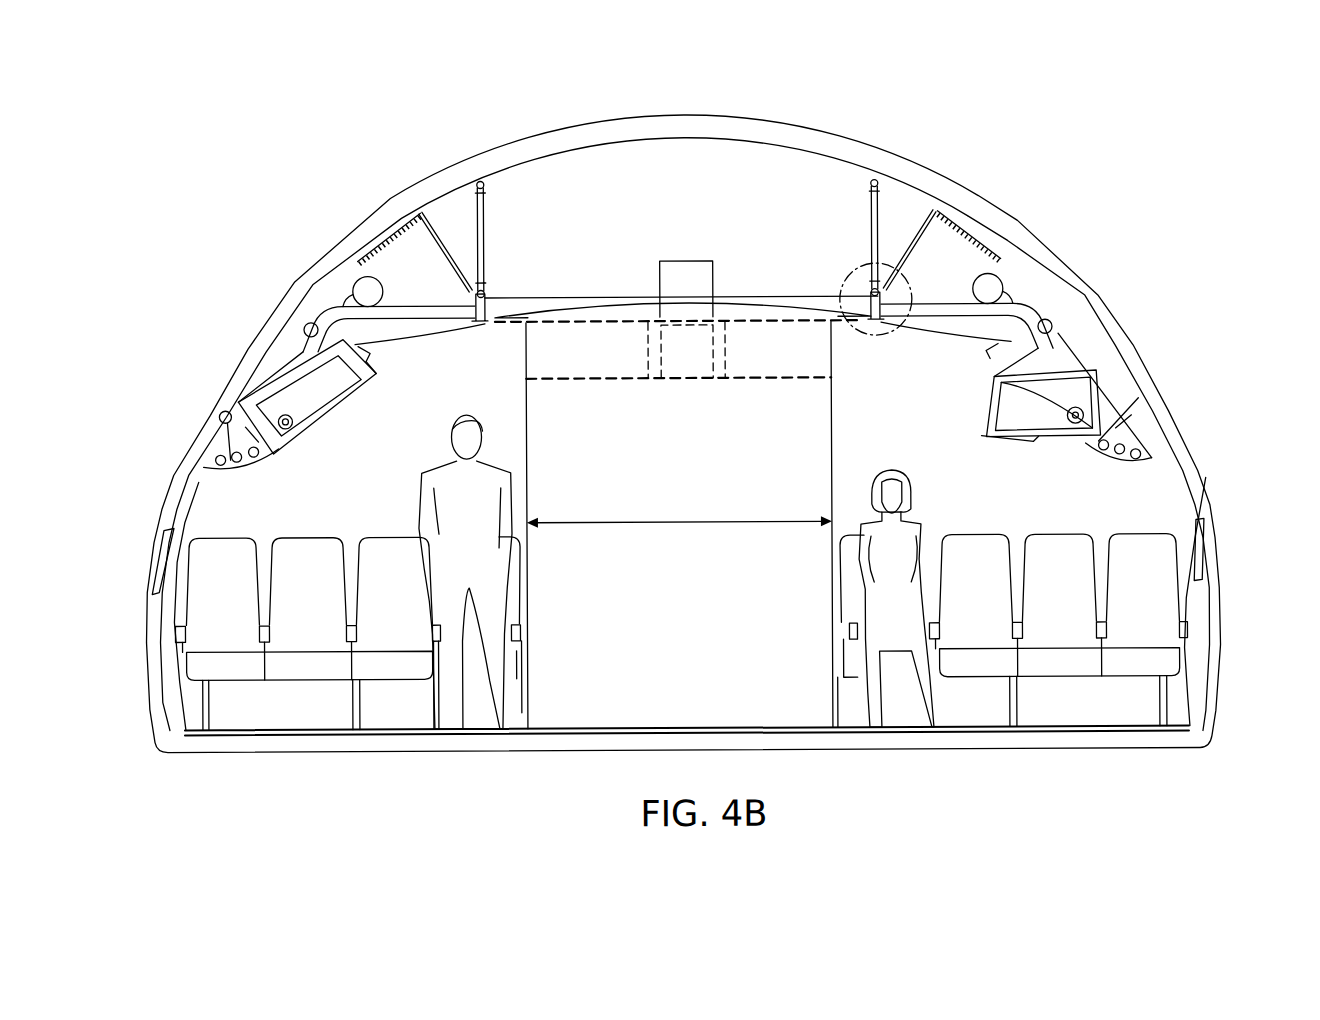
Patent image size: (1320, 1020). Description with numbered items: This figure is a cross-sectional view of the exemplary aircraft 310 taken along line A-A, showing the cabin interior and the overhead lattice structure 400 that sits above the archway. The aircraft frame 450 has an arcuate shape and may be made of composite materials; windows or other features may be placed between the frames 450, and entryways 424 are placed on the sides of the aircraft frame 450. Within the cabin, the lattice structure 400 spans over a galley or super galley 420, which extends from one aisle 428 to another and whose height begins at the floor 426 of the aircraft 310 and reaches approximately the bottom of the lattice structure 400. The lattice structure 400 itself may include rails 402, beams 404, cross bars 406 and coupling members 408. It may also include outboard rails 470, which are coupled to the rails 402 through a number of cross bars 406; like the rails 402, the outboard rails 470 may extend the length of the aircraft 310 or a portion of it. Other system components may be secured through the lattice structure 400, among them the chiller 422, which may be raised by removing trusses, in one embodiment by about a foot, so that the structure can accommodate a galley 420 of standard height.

The aircraft 310 is at (1090, 129).
The lattice structure 400 is at (616, 234).
The rails 402 is at (487, 294).
The beams 404 is at (612, 297).
The cross bars 406 is at (347, 306).
The coupling members 408 is at (440, 228).
The galley 420 is at (835, 447).
The chiller 422 is at (688, 260).
The entryways 424 is at (144, 567).
The floor 426 is at (859, 740).
The aisle 428 is at (202, 632).
The aircraft frame 450 is at (661, 128).
The outboard rails 470 is at (308, 322).